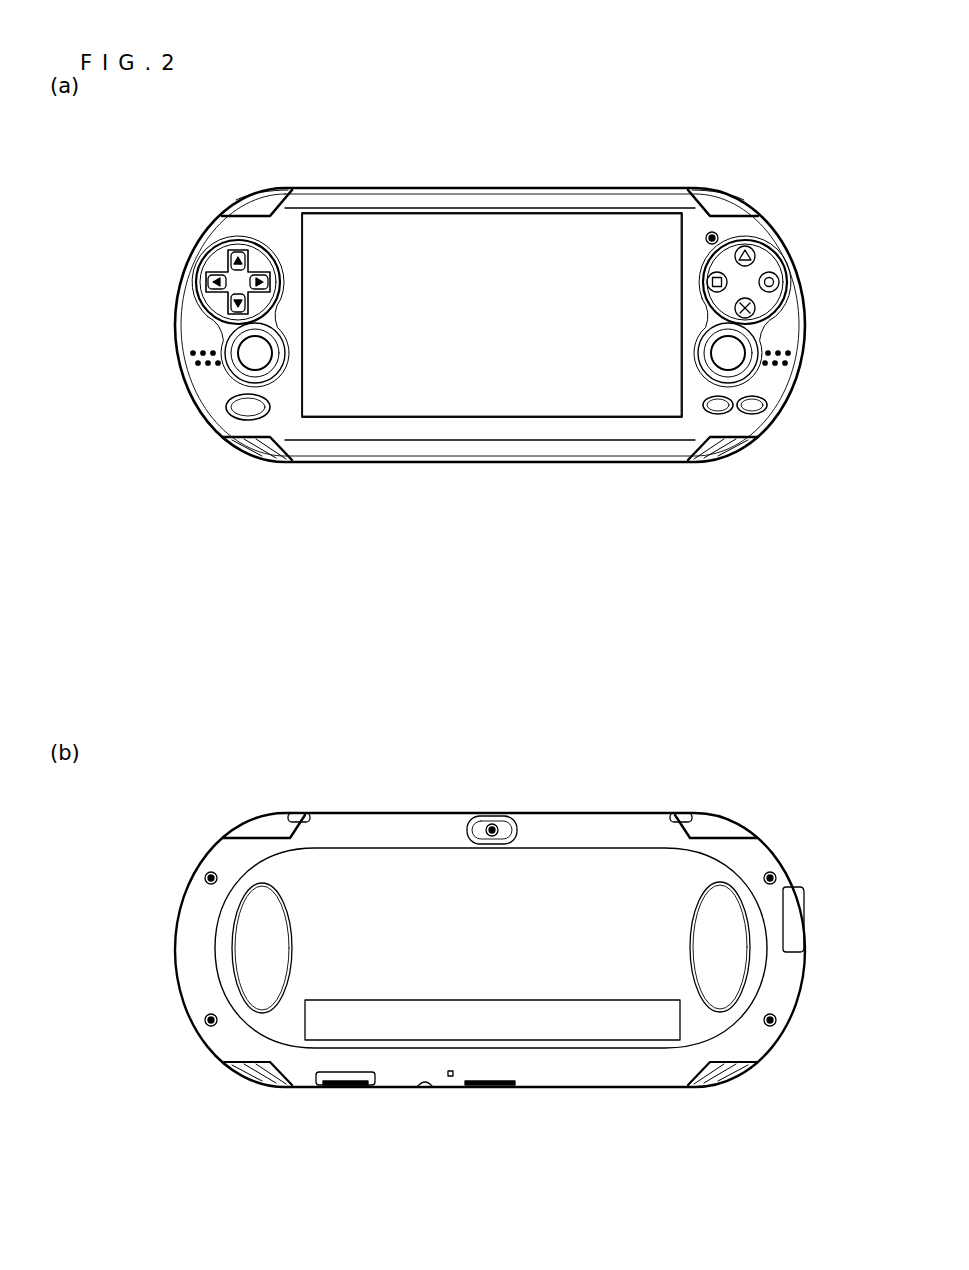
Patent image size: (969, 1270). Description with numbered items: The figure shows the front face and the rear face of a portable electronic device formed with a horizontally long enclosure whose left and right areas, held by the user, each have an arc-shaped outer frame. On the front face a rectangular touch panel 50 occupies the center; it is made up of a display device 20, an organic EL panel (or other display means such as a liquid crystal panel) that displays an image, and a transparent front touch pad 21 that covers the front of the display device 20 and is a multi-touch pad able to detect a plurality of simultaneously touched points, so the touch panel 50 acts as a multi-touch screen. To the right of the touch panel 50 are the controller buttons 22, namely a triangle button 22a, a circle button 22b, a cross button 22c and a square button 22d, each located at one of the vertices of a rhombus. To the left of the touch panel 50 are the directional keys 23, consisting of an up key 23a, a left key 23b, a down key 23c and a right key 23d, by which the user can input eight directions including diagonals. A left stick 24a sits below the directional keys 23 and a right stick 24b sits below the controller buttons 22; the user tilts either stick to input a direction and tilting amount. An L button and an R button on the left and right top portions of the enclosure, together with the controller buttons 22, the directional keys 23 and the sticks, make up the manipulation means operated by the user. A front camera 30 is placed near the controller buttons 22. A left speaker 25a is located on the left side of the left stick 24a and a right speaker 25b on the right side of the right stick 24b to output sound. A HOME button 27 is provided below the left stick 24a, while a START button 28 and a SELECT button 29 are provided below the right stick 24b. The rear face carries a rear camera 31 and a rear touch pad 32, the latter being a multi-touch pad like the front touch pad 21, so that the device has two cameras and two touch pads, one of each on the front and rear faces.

The display device 20 is at (487, 230).
The front touch pad 21 is at (487, 230).
The touch panel 50 is at (547, 142).
The controller buttons 22 is at (873, 218).
The triangle button 22a is at (754, 258).
The circle button 22b is at (777, 281).
The cross button 22c is at (727, 286).
The square button 22d is at (754, 307).
The directional keys 23 is at (112, 218).
The up key 23a is at (232, 258).
The left key 23b is at (214, 281).
The down key 23c is at (258, 284).
The right key 23d is at (232, 305).
The left stick 24a is at (250, 360).
The right stick 24b is at (732, 358).
The left speaker 25a is at (194, 358).
The right speaker 25b is at (790, 360).
The HOME button 27 is at (230, 406).
The START button 28 is at (762, 406).
The SELECT button 29 is at (720, 416).
The front camera 30 is at (708, 233).
The rear camera 31 is at (493, 817).
The rear touch pad 32 is at (590, 868).